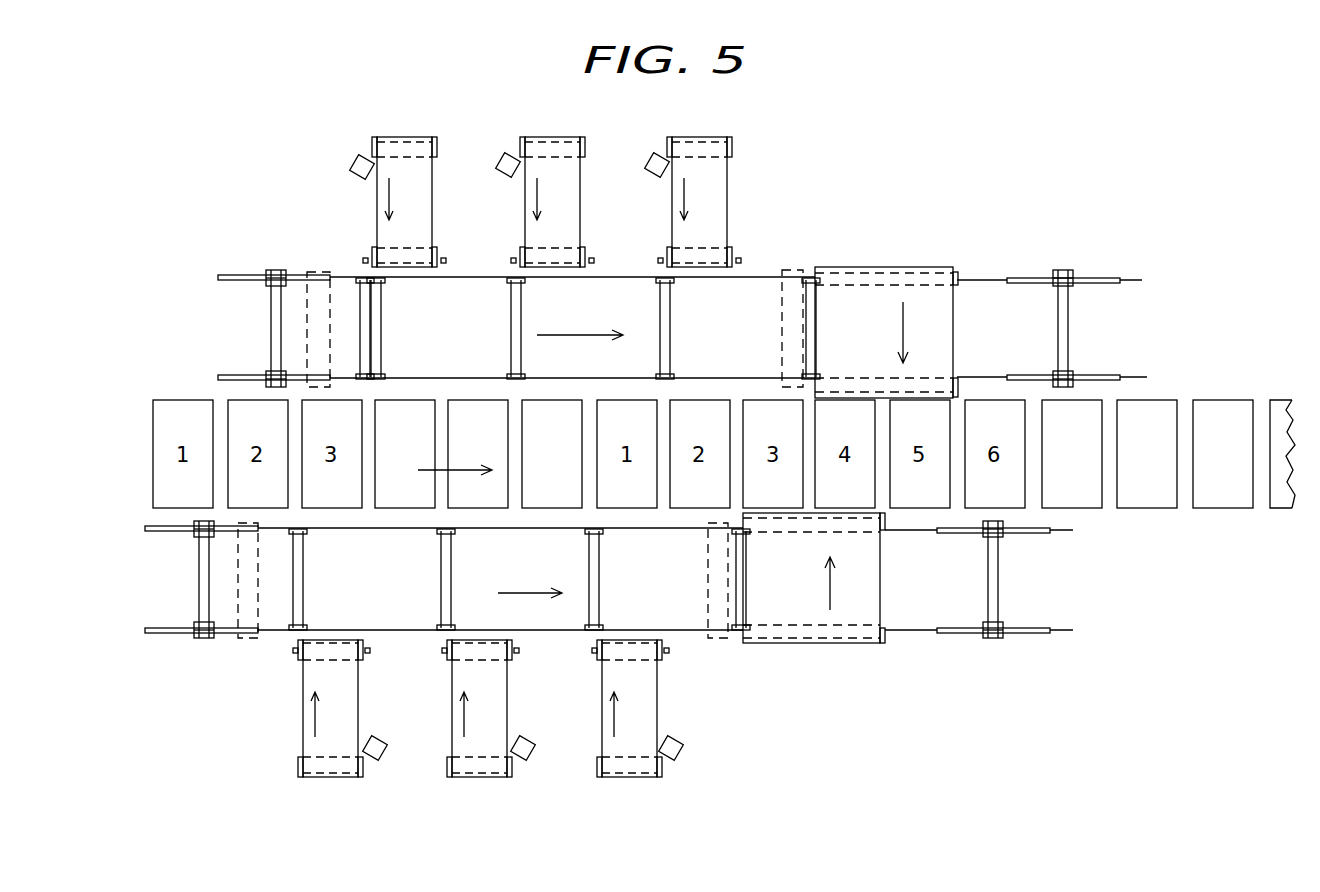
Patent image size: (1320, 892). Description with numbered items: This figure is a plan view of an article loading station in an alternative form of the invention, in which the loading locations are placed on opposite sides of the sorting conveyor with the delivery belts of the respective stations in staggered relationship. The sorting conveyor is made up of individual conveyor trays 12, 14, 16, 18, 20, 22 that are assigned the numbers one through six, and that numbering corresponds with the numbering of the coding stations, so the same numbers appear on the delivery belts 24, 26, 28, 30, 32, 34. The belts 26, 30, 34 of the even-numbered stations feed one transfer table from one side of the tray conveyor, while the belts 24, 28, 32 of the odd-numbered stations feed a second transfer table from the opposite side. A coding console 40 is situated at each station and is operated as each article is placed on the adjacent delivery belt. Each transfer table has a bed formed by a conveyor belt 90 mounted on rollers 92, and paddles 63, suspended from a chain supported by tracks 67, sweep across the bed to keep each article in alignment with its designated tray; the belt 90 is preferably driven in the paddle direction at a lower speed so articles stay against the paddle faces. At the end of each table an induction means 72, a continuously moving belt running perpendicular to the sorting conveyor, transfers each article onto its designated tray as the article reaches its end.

The conveyor tray 12 is at (1083, 497).
The conveyor tray 14 is at (1163, 497).
The conveyor tray 16 is at (1233, 497).
The conveyor tray 18 is at (407, 412).
The conveyor tray 20 is at (480, 412).
The conveyor tray 22 is at (553, 412).
The delivery belt 24 is at (348, 683).
The delivery belt 26 is at (424, 178).
The delivery belt 28 is at (497, 681).
The delivery belt 30 is at (571, 168).
The delivery belt 32 is at (645, 676).
The delivery belt 34 is at (717, 232).
The coding console 40 is at (498, 152).
The paddle 63 is at (507, 312).
The track 67 is at (245, 282).
The induction means 72 is at (942, 320).
The conveyor belt 90 is at (448, 337).
The roller 92 is at (810, 275).